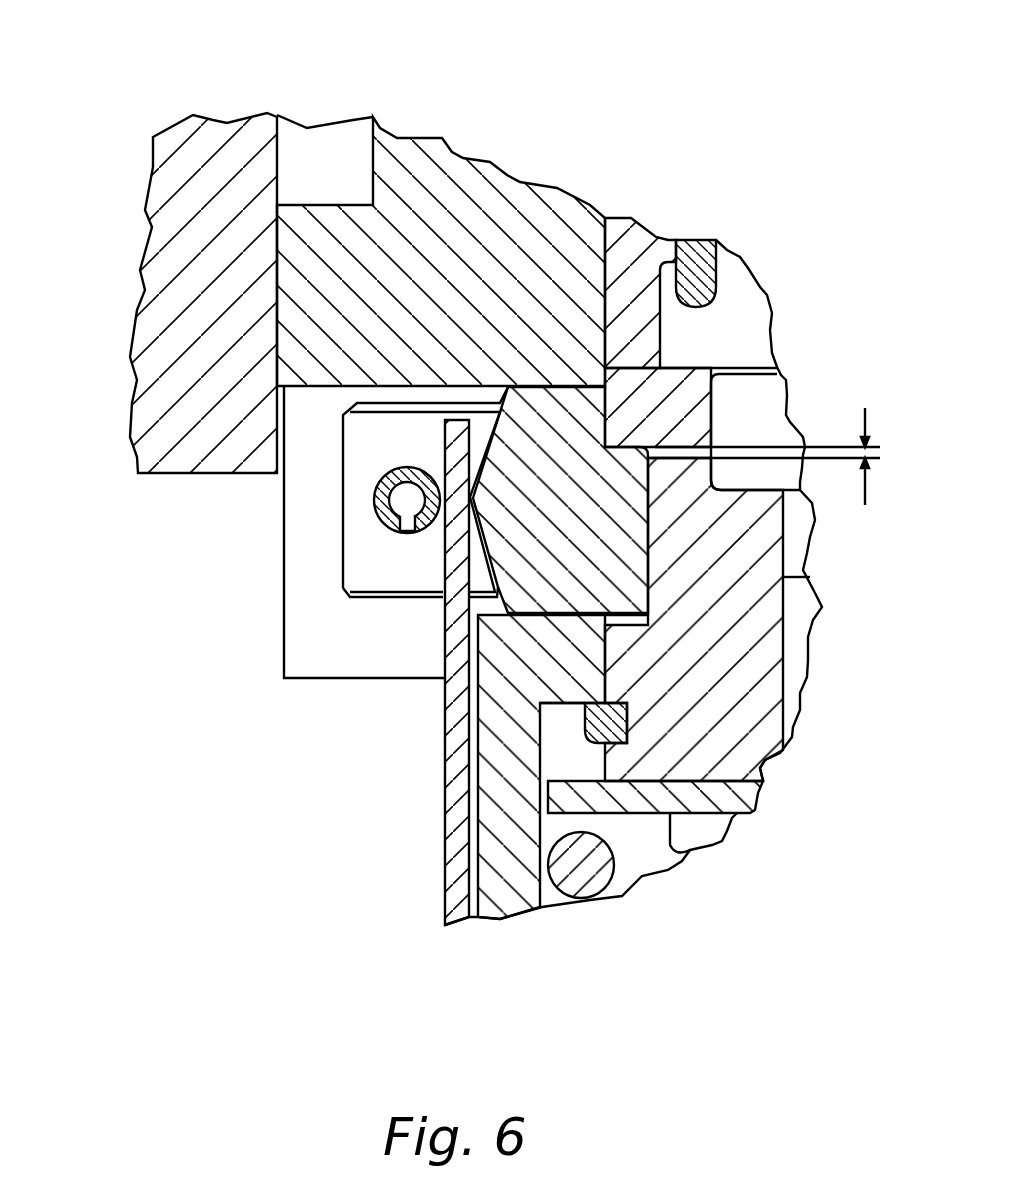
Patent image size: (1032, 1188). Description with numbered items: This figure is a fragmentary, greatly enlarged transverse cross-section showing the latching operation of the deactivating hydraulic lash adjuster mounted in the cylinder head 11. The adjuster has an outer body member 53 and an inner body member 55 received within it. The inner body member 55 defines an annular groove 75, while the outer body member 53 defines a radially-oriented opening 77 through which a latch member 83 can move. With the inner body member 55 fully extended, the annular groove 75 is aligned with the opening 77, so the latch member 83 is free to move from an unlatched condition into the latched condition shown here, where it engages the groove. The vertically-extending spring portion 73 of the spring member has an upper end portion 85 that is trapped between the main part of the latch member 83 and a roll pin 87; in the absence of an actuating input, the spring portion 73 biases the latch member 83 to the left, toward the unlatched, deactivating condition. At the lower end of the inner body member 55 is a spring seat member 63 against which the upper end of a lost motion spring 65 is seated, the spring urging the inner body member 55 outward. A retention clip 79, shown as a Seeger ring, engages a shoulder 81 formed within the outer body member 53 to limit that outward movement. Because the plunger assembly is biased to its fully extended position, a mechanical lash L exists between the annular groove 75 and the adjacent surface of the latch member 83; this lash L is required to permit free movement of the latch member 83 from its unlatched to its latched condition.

The cylinder head 11 is at (193, 153).
The outer body member 53 is at (455, 203).
The annular groove 75 is at (630, 455).
The inner body member 55 is at (640, 252).
The radially-oriented opening 77 is at (325, 388).
The roll pin 87 is at (373, 497).
The upper end portion 85 is at (447, 540).
The latch member 83 is at (565, 543).
The shoulder 81 is at (560, 713).
The retention clip 79 is at (607, 720).
The spring portion 73 is at (445, 880).
The spring seat member 63 is at (672, 850).
The lost motion spring 65 is at (588, 878).
The mechanical lash L is at (865, 408).